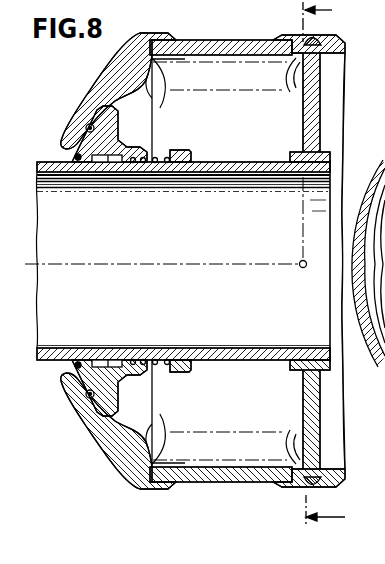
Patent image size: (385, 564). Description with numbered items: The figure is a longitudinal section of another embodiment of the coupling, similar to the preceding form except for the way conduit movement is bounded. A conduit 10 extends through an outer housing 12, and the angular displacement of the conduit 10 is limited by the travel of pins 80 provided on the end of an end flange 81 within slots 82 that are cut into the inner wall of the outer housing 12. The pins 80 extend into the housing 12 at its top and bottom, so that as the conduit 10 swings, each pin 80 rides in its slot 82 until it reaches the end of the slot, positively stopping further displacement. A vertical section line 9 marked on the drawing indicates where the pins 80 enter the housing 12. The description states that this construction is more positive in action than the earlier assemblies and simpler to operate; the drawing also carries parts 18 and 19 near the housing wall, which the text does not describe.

The section line 9- 9 is at (316, 264).
The conduit 10 is at (230, 162).
The outer housing 12 is at (211, 40).
The gasket 18 is at (178, 56).
The sealing lip 19 is at (184, 90).
The pins 80 is at (308, 48).
The end flange 81 is at (320, 88).
The slots 82 is at (287, 36).